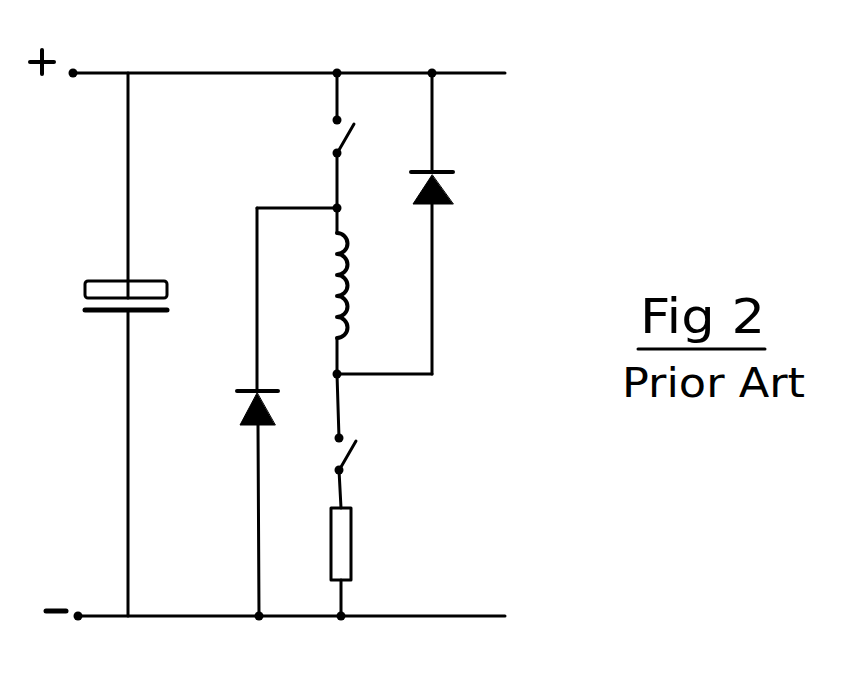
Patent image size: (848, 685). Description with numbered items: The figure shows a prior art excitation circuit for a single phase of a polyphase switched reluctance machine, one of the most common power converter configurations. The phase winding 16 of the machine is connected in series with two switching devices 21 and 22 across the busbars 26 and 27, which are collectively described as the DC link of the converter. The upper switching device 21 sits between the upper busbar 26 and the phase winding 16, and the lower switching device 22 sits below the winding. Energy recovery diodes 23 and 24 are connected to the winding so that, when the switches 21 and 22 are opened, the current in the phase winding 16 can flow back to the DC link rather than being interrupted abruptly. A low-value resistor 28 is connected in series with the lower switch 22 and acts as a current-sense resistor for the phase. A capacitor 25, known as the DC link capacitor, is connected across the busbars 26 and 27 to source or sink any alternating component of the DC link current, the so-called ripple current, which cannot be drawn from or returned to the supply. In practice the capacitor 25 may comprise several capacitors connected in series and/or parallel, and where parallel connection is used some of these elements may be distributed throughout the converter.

The phase winding 16 is at (358, 262).
The switching device 21 is at (332, 139).
The switching device 22 is at (358, 453).
The energy recovery diode 23 is at (457, 183).
The energy recovery diode 24 is at (240, 400).
The capacitor 25 is at (80, 299).
The busbar 26 is at (222, 73).
The busbar 27 is at (201, 618).
The resistor 28 is at (354, 540).